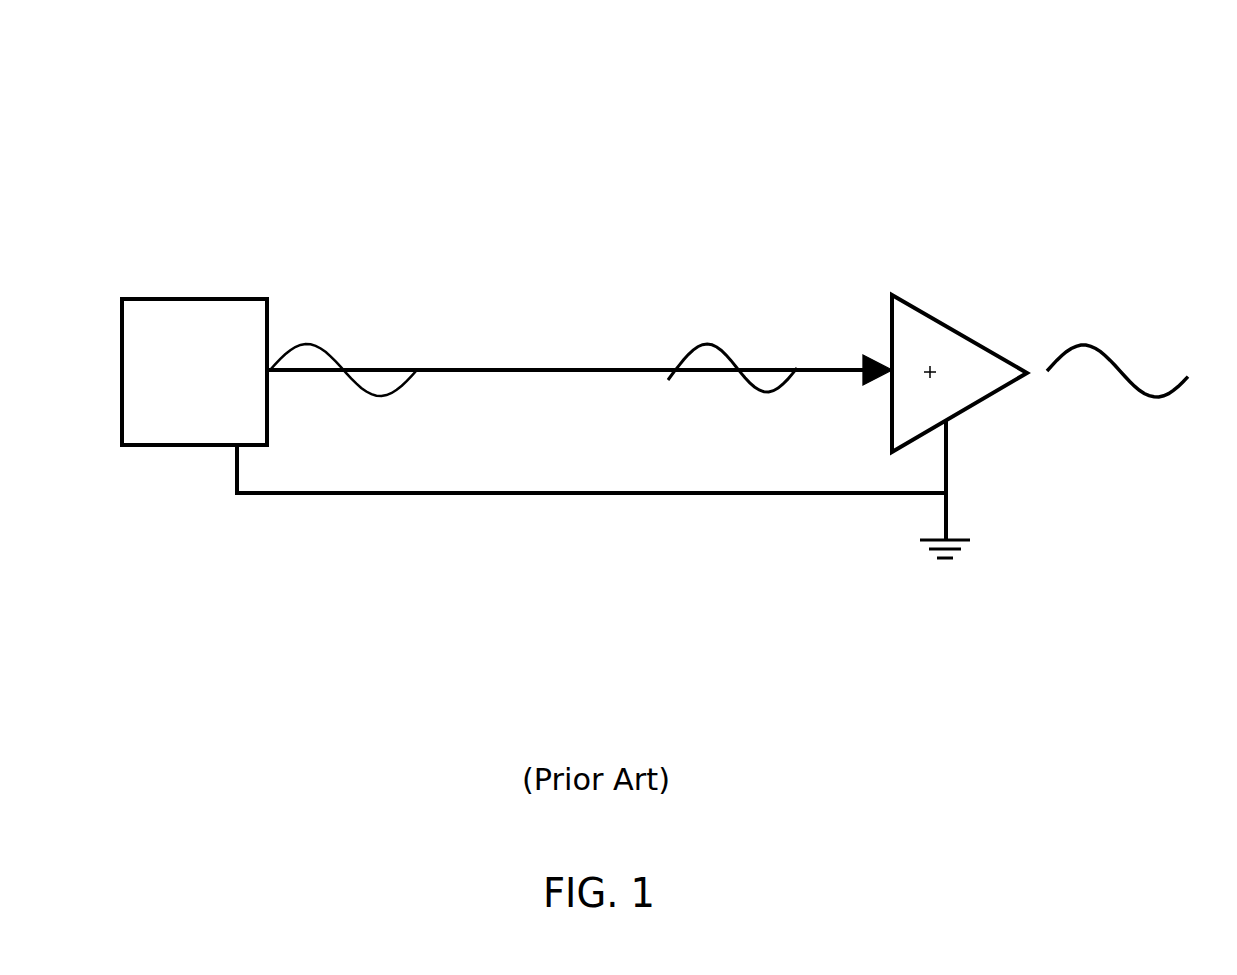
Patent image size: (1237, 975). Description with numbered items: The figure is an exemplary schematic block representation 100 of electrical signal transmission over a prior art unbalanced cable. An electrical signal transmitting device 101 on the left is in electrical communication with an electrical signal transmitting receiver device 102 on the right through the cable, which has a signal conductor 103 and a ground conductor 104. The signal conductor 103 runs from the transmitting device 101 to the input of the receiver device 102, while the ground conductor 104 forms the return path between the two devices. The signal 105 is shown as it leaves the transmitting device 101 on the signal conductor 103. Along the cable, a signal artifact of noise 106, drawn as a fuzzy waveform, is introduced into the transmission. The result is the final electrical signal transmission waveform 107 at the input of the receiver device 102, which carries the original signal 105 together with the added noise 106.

The schematic block representation 100 is at (83, 55).
The electrical signal transmitting device 101 is at (172, 282).
The electrical signal transmitting receiver device 102 is at (973, 281).
The signal conductor 103 is at (503, 367).
The ground conductor 104 is at (497, 497).
The signal 105 is at (320, 343).
The noise 106 is at (710, 337).
The final electrical signal transmission waveform 107 is at (1095, 343).